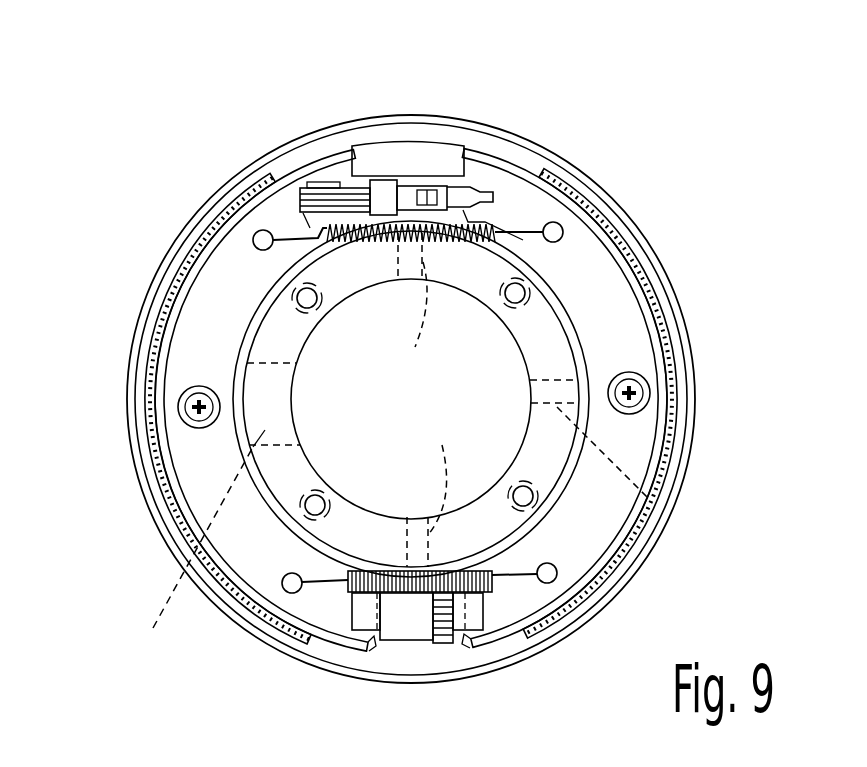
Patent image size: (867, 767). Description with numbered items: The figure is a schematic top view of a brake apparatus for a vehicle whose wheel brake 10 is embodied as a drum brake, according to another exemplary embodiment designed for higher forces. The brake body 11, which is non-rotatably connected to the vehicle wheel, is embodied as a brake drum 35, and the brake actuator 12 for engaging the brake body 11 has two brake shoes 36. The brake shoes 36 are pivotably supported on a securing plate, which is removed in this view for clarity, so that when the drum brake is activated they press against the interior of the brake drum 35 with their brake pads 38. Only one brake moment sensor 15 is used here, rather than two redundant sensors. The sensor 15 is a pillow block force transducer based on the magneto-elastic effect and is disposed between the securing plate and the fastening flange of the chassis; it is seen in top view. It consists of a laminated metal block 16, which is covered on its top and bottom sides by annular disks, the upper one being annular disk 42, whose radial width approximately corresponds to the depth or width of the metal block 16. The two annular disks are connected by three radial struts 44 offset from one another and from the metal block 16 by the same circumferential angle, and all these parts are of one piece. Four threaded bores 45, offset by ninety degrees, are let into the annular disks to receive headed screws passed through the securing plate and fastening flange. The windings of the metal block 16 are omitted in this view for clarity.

The wheel brake 10 is at (585, 155).
The brake body 11 is at (632, 217).
The brake actuator 12 is at (505, 200).
The brake moment sensor 15 is at (567, 313).
The metal block 16 is at (196, 537).
The brake drum 35 is at (673, 295).
The brake shoes 36 is at (203, 462).
The brake pads 38 is at (150, 438).
The annular disk 42 is at (545, 490).
The radial struts 44 is at (730, 553).
The threaded bores 45 is at (317, 307).